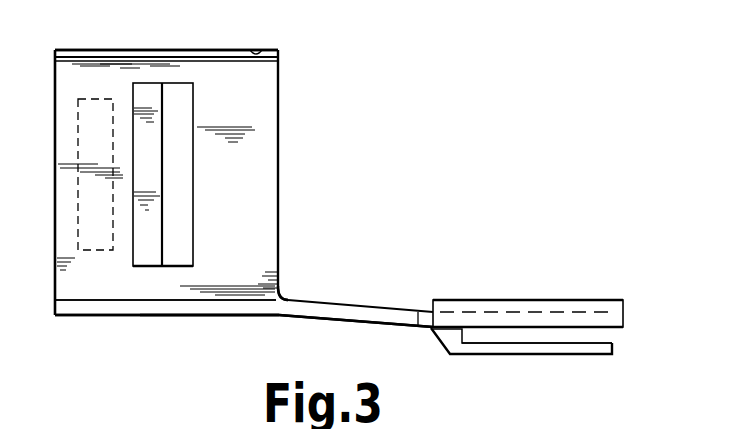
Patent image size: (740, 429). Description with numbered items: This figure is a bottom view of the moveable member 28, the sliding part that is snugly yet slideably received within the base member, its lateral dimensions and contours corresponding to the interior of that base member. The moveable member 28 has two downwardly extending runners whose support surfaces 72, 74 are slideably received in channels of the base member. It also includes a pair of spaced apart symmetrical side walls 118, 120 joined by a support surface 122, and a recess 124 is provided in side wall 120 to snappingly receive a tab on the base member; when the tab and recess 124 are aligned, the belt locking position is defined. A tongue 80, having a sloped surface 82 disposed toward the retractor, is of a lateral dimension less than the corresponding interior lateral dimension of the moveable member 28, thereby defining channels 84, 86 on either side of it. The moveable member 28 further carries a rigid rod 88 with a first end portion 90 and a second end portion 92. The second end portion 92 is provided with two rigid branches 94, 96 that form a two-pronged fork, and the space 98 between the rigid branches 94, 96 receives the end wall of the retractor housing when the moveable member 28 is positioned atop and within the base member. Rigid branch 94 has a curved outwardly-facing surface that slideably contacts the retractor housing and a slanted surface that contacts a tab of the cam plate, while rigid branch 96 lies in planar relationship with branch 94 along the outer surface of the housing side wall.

The moveable member 28 is at (298, 56).
The support surface 72 is at (190, 308).
The support surface 74 is at (181, 54).
The tongue 80 is at (138, 176).
The sloped surface 82 is at (180, 187).
The channel 84 is at (168, 288).
The channel 86 is at (137, 72).
The rigid rod 88 is at (390, 315).
The first end portion 90 is at (291, 287).
The second end portion 92 is at (571, 329).
The rigid branch 94 is at (560, 295).
The rigid branch 96 is at (525, 364).
The space 98 is at (572, 337).
The side wall 118 is at (234, 322).
The side wall 120 is at (234, 47).
The support surface 122 is at (250, 227).
The recess 124 is at (257, 50).